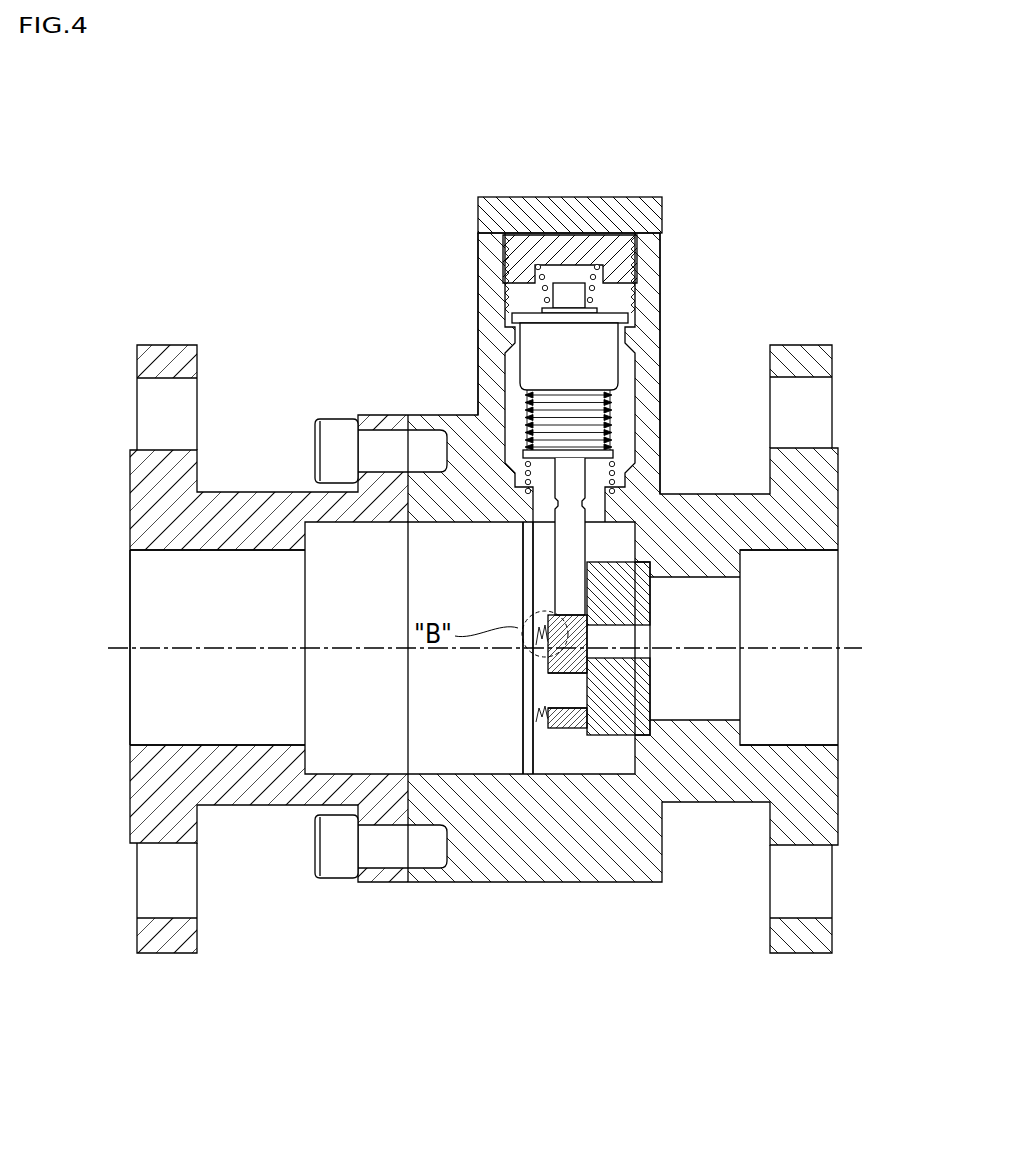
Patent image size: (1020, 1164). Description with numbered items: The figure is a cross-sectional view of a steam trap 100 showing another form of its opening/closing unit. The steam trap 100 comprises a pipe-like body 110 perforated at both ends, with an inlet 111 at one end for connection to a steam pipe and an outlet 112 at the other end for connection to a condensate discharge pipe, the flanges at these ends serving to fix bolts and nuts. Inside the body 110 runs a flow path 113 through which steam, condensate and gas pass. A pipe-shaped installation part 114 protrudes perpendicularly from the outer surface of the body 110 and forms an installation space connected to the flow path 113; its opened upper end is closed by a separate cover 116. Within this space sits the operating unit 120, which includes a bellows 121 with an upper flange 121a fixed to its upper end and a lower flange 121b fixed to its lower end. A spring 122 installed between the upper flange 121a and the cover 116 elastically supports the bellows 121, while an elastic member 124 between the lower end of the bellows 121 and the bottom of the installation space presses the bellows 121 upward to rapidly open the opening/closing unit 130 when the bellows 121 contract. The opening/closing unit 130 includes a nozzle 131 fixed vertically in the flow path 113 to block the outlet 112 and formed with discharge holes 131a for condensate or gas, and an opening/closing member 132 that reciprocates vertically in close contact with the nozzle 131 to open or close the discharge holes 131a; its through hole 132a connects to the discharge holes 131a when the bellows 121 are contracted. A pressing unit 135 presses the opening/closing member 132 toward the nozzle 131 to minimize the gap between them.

The steam trap 100 is at (442, 133).
The body 110 is at (453, 875).
The inlet 111 is at (192, 745).
The outlet 112 is at (798, 745).
The flow path 113 is at (185, 597).
The installation part 114 is at (652, 289).
The cover 116 is at (653, 213).
The operating unit 120 is at (485, 363).
The bellows 121 is at (636, 460).
The upper flange 121a is at (625, 318).
The lower flange 121b is at (607, 455).
The spring 122 is at (547, 291).
The elastic member 124 is at (497, 392).
The opening/closing unit 130 is at (705, 778).
The nozzle 131 is at (758, 754).
The discharge hole 131a is at (650, 637).
The opening/closing member 132 is at (540, 780).
The through hole 132a is at (548, 688).
The pressing unit 135 is at (523, 560).